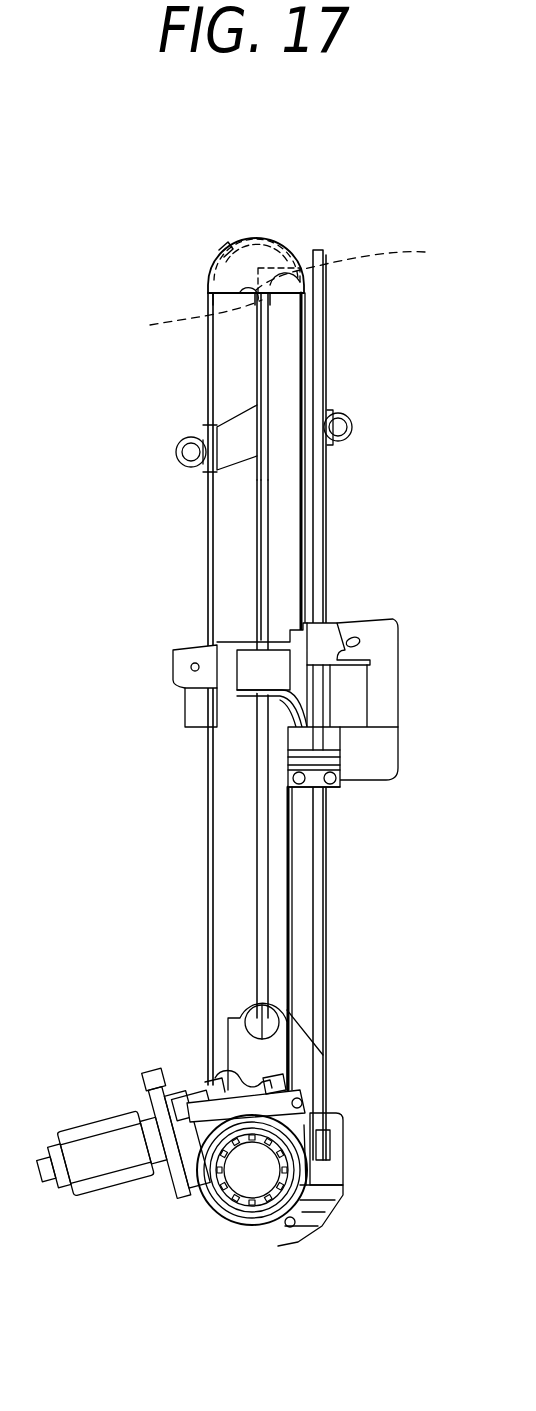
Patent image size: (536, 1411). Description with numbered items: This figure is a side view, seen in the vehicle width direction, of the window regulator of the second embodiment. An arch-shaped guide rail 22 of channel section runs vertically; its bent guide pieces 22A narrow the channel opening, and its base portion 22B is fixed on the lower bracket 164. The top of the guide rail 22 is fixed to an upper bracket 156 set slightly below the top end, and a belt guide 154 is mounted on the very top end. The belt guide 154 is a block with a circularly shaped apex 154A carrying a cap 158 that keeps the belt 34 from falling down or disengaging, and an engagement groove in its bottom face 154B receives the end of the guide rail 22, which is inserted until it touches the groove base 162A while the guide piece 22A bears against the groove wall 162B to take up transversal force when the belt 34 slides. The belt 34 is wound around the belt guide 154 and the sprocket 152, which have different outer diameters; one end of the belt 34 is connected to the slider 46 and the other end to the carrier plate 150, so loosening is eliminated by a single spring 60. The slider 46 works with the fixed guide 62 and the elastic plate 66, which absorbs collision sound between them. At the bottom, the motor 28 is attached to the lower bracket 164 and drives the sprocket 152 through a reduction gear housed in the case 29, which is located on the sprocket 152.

The guide rail 22 is at (330, 360).
The guide piece 22A is at (257, 372).
The base portion 22B is at (290, 523).
The motor 28 is at (103, 1140).
The case 29 is at (330, 1195).
The belt 34 is at (210, 350).
The slider 46 is at (330, 738).
The spring 60 is at (342, 762).
The fixed guide 62 is at (310, 790).
The elastic plate 66 is at (340, 786).
The carrier plate 150 is at (385, 640).
The sprocket 152 is at (205, 1212).
The belt guide 154 is at (212, 275).
The apex 154A is at (293, 268).
The bottom face 154B is at (210, 291).
The upper bracket 156 is at (352, 428).
The cap 158 is at (262, 240).
The groove base 162A is at (376, 261).
The groove wall 162B is at (172, 321).
The lower bracket 164 is at (352, 1124).